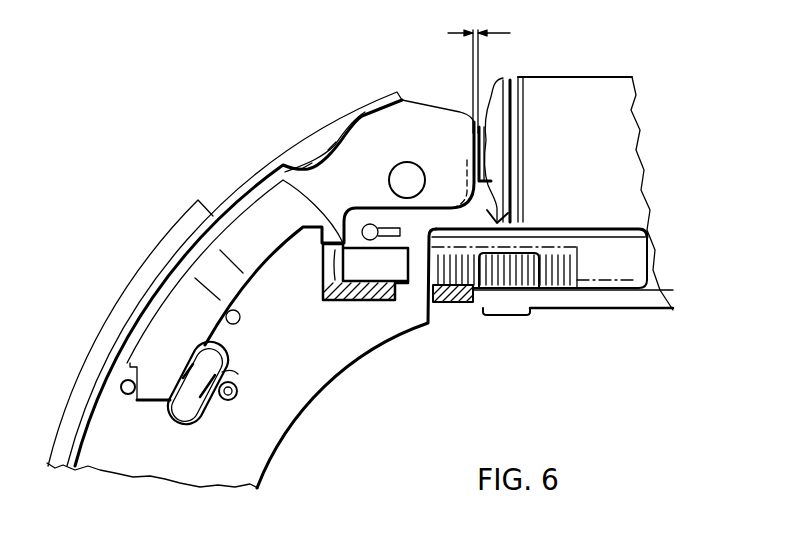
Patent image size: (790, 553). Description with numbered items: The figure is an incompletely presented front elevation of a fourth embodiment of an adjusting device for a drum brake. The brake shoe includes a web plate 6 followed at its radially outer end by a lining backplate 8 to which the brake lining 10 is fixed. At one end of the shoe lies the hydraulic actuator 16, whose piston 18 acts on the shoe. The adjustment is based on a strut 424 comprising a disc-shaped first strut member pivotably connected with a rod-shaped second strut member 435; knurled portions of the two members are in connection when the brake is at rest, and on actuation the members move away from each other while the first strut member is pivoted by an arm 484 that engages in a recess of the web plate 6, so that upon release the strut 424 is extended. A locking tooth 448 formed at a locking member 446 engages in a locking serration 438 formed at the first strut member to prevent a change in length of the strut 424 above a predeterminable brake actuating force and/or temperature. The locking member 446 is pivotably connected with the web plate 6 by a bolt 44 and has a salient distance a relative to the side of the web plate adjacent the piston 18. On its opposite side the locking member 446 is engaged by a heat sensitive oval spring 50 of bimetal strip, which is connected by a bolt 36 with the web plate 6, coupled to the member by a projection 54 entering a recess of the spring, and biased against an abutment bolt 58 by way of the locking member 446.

The web plate 6 is at (202, 457).
The lining backplate 8 is at (82, 443).
The brake lining 10 is at (63, 452).
The hydraulic actuator 16 is at (594, 97).
The piston 18 is at (498, 80).
The bolt 36 is at (240, 396).
The bolt 44 is at (407, 161).
The spring 50 is at (167, 410).
The projection 54 is at (187, 360).
The abutment bolt 58 is at (122, 383).
The strut 424 is at (475, 305).
The second strut member 435 is at (573, 298).
The locking serration 438 is at (341, 300).
The locking member 446 is at (365, 167).
The locking tooth 448 is at (274, 186).
The arm 484 is at (375, 268).
The salient distance a is at (479, 68).